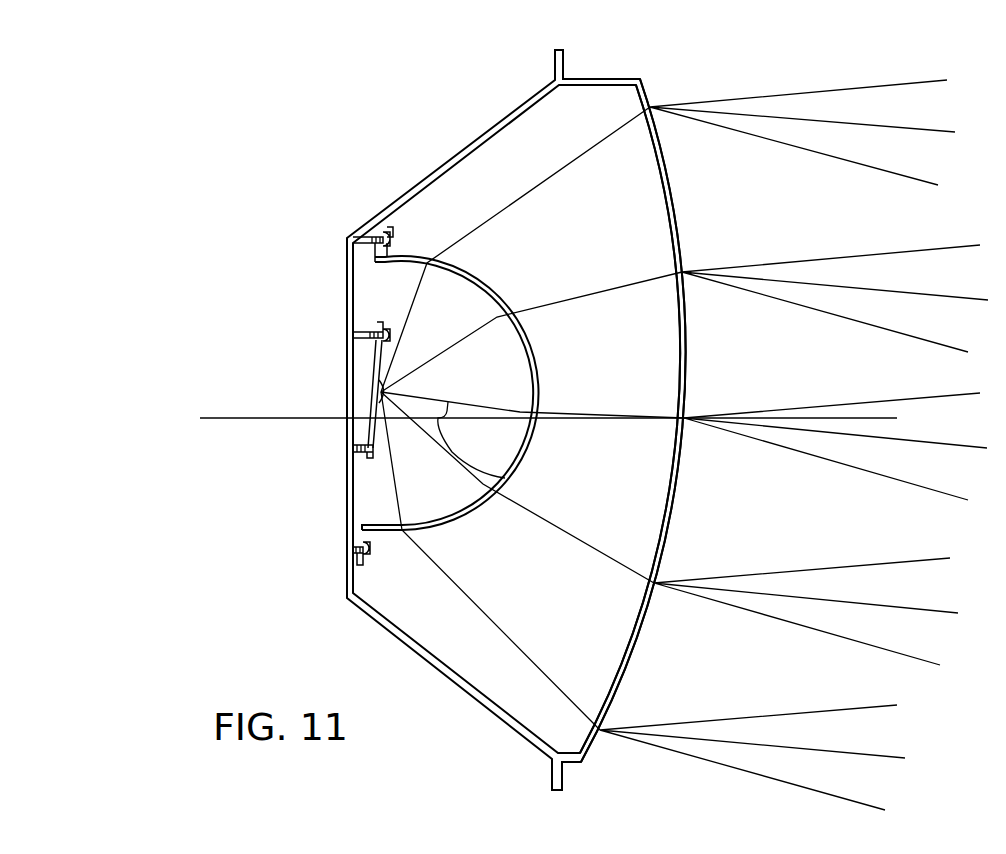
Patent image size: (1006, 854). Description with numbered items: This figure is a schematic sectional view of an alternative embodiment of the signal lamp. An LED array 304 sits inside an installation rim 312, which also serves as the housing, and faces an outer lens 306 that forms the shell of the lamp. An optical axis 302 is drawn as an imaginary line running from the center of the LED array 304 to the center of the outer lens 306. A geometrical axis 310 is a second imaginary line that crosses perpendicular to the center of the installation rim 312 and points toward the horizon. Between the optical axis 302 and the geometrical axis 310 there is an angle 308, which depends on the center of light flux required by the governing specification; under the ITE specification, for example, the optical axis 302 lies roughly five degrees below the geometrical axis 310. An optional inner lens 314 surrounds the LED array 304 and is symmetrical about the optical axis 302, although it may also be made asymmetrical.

The optical axis 302 is at (553, 396).
The LED array 304 is at (371, 381).
The outer lens 306 is at (679, 208).
The angle 308 is at (505, 478).
The geometrical axis 310 is at (566, 432).
The installation rim 312 is at (573, 56).
The inner lens 314 is at (376, 263).